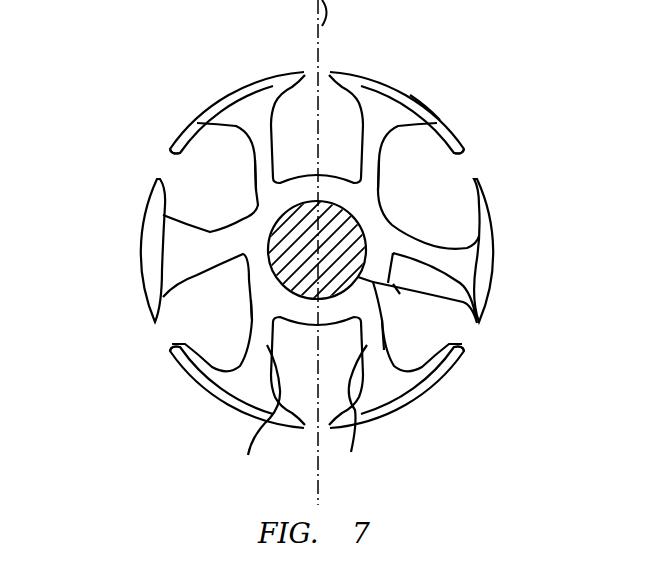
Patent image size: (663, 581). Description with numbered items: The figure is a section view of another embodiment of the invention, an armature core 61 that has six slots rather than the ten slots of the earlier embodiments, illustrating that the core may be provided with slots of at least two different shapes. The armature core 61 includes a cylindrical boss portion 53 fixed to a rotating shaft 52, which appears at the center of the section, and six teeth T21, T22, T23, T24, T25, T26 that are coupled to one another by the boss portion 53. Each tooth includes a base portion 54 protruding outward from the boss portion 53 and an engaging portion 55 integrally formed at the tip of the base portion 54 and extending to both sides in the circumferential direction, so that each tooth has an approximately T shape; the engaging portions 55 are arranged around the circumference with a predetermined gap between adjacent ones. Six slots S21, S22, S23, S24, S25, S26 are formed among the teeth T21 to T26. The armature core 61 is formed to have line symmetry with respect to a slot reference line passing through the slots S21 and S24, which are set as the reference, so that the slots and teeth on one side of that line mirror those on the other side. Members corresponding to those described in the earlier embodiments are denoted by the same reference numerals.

The tooth T21 is at (399, 77).
The tooth T22 is at (512, 261).
The tooth T23 is at (405, 418).
The tooth T24 is at (210, 408).
The tooth T25 is at (131, 253).
The tooth T26 is at (218, 82).
The slot S21 is at (310, 103).
The slot S22 is at (444, 182).
The slot S23 is at (447, 330).
The slot S24 is at (305, 390).
The slot S25 is at (178, 326).
The slot S26 is at (190, 182).
The rotating shaft 52 is at (340, 264).
The boss portion 53 is at (393, 284).
The base portion 54 is at (262, 163).
The engaging portion 55 is at (296, 77).
The armature core 61 is at (436, 75).